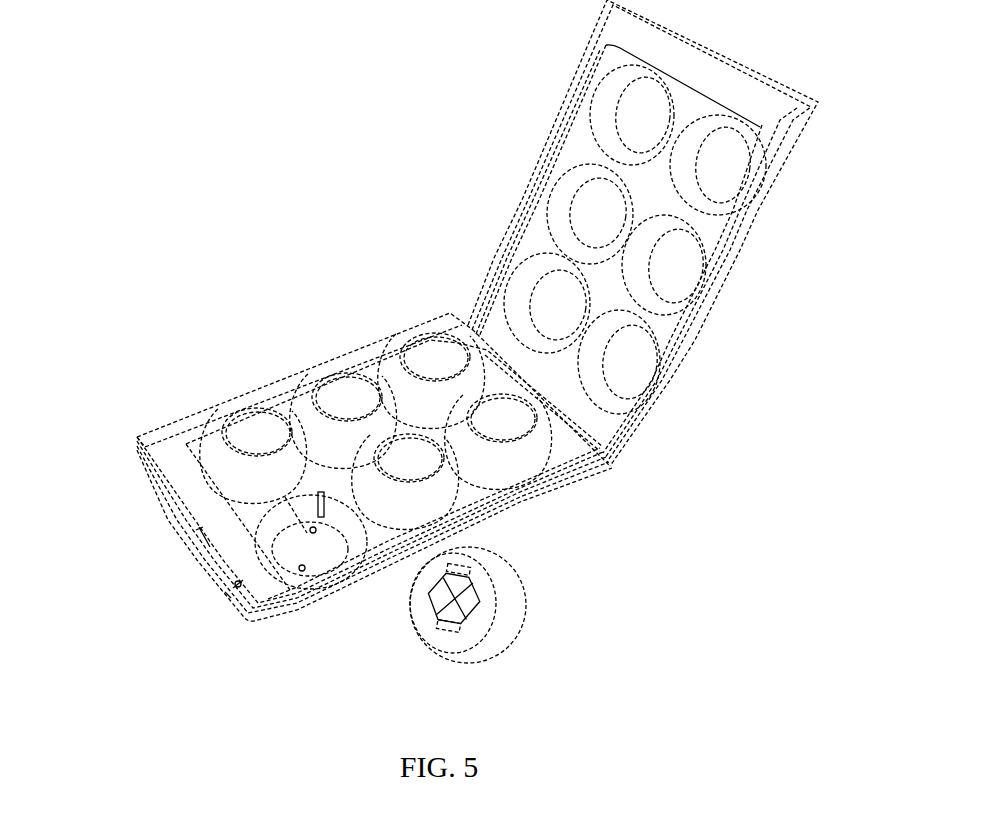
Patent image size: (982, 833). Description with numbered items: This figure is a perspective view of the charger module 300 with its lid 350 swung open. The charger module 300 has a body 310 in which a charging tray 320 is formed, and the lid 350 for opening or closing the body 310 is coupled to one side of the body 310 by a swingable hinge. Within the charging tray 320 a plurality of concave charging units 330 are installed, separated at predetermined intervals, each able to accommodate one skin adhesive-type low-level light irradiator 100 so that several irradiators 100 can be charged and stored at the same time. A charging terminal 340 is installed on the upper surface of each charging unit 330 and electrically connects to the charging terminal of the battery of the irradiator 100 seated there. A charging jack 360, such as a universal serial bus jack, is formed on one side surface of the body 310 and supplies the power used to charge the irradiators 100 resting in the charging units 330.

The skin adhesive-type low-level light irradiator 100 is at (188, 416).
The charger module 300 is at (336, 233).
The body 310 is at (545, 500).
The charging tray 320 is at (287, 400).
The charging unit 330 is at (228, 580).
The charging terminal 340 is at (322, 520).
The lid 350 is at (540, 163).
The charging jack 360 is at (185, 543).